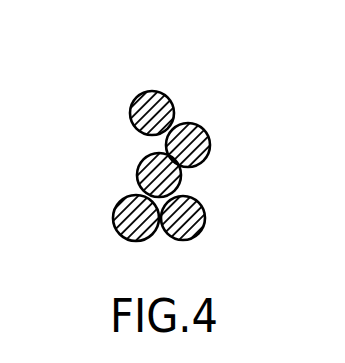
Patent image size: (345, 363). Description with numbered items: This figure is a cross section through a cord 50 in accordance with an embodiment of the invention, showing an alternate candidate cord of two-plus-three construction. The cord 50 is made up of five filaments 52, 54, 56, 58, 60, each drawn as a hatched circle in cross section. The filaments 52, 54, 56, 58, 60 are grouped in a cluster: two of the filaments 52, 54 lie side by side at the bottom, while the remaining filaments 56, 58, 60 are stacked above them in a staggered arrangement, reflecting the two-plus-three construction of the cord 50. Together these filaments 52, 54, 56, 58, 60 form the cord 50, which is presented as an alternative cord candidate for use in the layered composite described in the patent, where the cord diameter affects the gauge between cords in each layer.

The cord 50 is at (195, 102).
The filament 52 is at (205, 223).
The filament 54 is at (120, 227).
The filament 56 is at (137, 175).
The filament 58 is at (209, 132).
The filament 60 is at (139, 92).